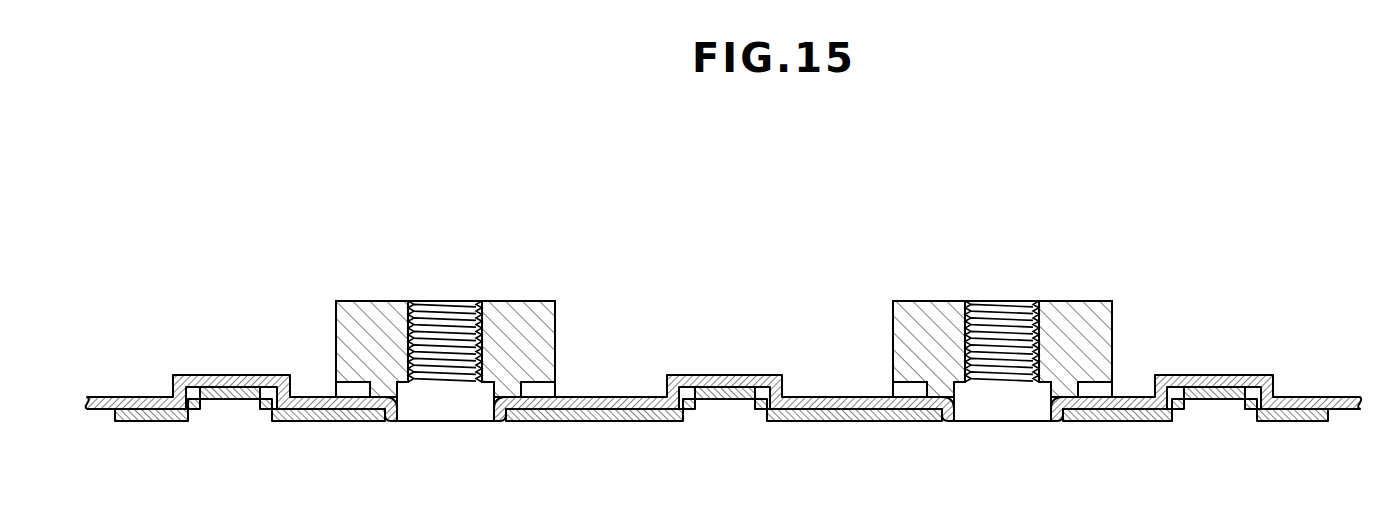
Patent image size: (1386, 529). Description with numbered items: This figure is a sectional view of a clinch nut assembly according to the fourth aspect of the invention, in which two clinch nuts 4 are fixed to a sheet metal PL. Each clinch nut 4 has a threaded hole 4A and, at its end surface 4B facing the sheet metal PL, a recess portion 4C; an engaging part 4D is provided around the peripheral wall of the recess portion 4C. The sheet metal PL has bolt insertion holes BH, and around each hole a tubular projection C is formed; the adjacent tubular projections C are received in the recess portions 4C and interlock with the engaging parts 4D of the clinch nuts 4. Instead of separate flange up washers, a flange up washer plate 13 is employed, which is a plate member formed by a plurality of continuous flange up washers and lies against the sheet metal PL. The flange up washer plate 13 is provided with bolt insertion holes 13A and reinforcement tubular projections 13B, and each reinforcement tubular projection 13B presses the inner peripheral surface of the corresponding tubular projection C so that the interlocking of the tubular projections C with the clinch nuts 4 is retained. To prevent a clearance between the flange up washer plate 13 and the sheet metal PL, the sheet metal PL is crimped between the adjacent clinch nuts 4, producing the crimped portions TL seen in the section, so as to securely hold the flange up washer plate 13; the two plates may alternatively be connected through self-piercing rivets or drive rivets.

The clinch nut 4 is at (754, 360).
The threaded hole 4A is at (449, 325).
The end surface 4B is at (529, 400).
The recess portion 4C is at (486, 399).
The engaging part 4D is at (348, 389).
The flange up washer plate 13 is at (724, 360).
The bolt insertion hole 13A is at (399, 415).
The reinforcement tubular projection 13B is at (387, 393).
The bolt insertion hole BH is at (404, 400).
The tubular projection C is at (371, 386).
The tongue portion TL is at (238, 366).
The sheet metal PL is at (826, 408).